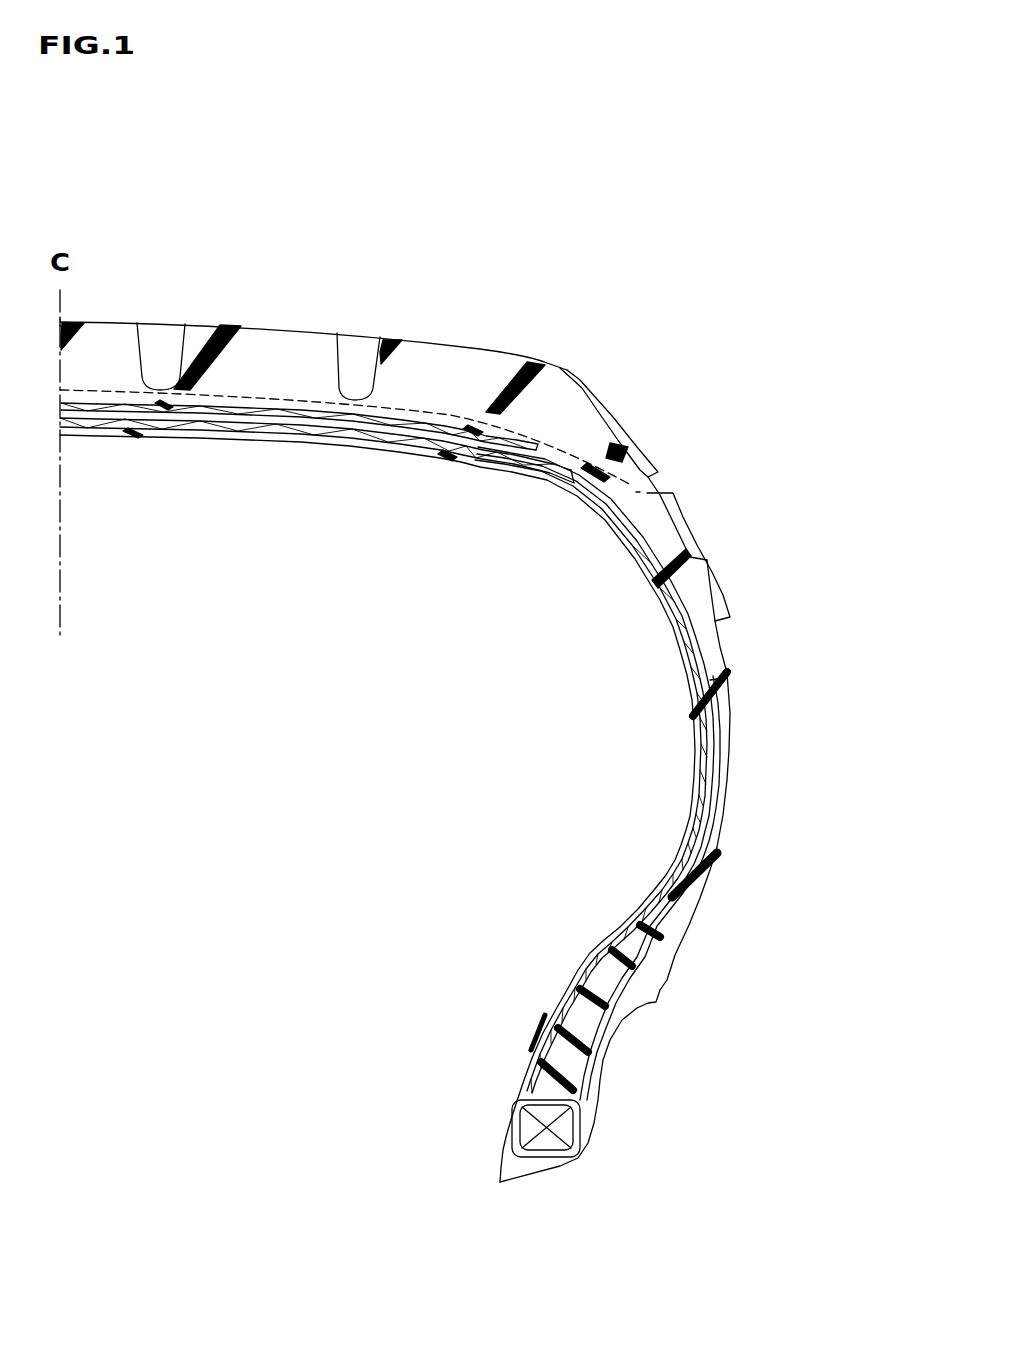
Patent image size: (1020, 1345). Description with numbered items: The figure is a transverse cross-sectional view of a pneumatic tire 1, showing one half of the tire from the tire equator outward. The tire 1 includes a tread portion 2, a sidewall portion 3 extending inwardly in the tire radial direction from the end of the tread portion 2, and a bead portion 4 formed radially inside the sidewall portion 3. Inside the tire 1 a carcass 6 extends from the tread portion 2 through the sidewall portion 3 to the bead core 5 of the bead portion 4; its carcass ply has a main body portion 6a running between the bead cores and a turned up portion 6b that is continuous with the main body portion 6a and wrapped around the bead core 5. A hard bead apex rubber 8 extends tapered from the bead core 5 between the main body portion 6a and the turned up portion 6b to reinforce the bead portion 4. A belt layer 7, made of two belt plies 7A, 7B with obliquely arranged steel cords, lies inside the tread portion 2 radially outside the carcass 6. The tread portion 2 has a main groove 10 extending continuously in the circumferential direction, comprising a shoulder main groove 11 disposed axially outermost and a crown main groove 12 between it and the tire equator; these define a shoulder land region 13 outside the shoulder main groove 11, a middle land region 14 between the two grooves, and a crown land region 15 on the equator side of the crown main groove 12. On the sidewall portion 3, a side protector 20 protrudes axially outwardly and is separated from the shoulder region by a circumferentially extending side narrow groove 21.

The pneumatic tire 1 is at (596, 280).
The tread portion 2 is at (350, 346).
The sidewall portion 3 is at (745, 669).
The bead portion 4 is at (648, 1038).
The bead core 5 is at (544, 1143).
The carcass 6 is at (580, 773).
The main body portion 6a is at (702, 736).
The turned up portion 6b is at (708, 774).
The belt layer 7 is at (335, 512).
The belt ply 7A is at (158, 417).
The belt ply 7B is at (250, 417).
The bead apex rubber 8 is at (606, 986).
The main groove 10 is at (268, 320).
The shoulder main groove 11 is at (350, 360).
The crown main groove 12 is at (160, 358).
The shoulder land region 13 is at (492, 388).
The middle land region 14 is at (262, 353).
The crown land region 15 is at (100, 350).
The side protector 20 is at (724, 572).
The side narrow groove 21 is at (670, 486).